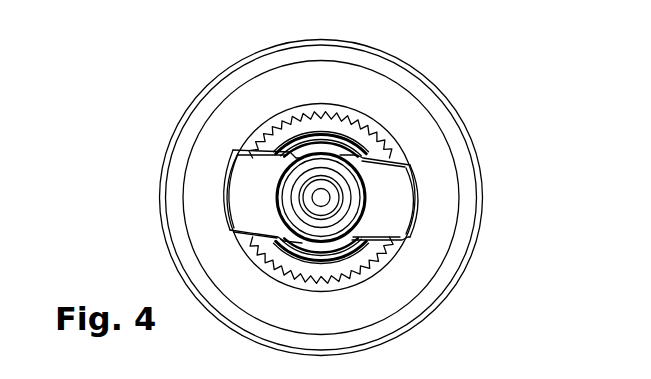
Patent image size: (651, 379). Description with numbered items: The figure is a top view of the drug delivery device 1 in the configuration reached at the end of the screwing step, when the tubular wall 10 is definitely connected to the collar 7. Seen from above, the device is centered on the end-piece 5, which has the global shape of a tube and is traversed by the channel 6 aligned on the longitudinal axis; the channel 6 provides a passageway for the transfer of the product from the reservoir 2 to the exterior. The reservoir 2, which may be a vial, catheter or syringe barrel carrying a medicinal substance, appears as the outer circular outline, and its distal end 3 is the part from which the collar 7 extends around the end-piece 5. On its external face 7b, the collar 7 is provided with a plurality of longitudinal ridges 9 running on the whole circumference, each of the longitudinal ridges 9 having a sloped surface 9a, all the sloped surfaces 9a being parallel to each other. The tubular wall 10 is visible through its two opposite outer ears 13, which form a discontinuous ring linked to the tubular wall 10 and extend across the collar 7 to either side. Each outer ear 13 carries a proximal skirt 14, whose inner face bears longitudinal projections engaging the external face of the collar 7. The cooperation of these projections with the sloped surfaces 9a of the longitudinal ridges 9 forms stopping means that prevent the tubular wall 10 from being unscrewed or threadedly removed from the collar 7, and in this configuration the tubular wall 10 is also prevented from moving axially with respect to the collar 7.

The drug delivery device 1 is at (483, 88).
The reservoir 2 is at (473, 128).
The distal end 3 is at (210, 132).
The end-piece 5 is at (324, 199).
The channel 6 is at (332, 210).
The collar 7 is at (287, 137).
The external face 7b is at (302, 105).
The longitudinal ridges 9 is at (343, 105).
The sloped surface 9a is at (319, 117).
The tubular wall 10 is at (307, 233).
The outer ears 13 is at (245, 194).
The proximal skirt 14 is at (222, 211).